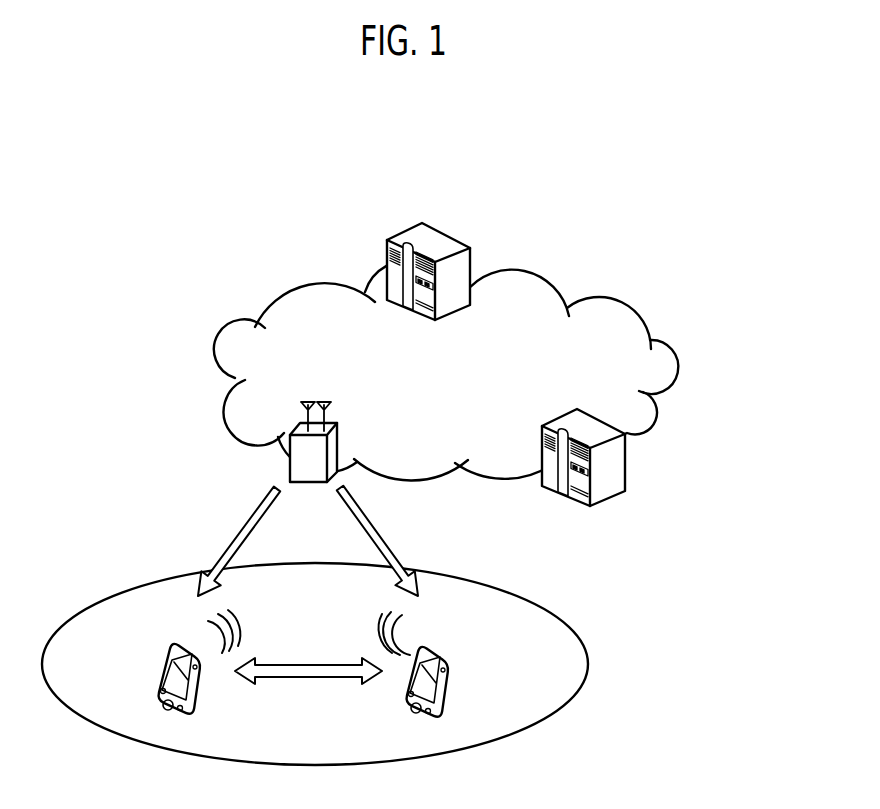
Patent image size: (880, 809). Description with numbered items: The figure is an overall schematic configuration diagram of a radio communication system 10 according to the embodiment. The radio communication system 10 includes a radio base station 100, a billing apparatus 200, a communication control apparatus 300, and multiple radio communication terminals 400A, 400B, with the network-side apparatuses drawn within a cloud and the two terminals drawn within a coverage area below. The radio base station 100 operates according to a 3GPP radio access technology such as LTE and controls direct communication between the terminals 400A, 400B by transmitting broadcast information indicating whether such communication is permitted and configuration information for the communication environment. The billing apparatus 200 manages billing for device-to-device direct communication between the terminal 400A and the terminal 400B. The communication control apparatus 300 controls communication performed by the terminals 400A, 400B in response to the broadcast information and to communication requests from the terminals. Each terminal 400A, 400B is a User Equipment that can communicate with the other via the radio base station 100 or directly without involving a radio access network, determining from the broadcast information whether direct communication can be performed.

The radio communication system 10 is at (660, 167).
The radio base station 100 is at (340, 437).
The billing apparatus 200 is at (628, 467).
The communication control apparatus 300 is at (447, 232).
The radio communication terminal 400A is at (161, 670).
The radio communication terminal 400B is at (453, 659).